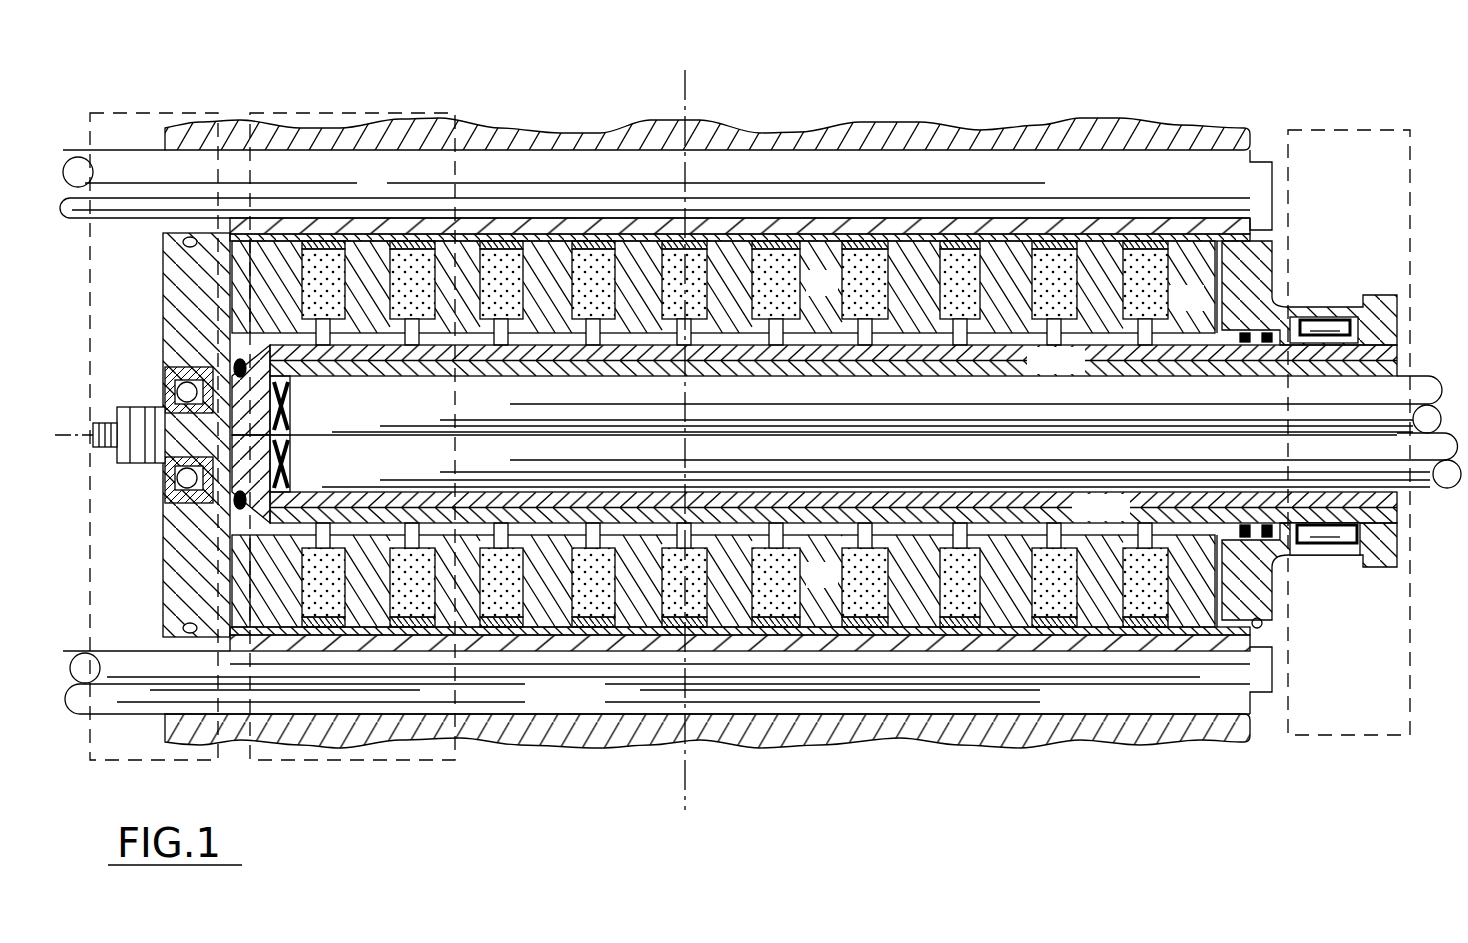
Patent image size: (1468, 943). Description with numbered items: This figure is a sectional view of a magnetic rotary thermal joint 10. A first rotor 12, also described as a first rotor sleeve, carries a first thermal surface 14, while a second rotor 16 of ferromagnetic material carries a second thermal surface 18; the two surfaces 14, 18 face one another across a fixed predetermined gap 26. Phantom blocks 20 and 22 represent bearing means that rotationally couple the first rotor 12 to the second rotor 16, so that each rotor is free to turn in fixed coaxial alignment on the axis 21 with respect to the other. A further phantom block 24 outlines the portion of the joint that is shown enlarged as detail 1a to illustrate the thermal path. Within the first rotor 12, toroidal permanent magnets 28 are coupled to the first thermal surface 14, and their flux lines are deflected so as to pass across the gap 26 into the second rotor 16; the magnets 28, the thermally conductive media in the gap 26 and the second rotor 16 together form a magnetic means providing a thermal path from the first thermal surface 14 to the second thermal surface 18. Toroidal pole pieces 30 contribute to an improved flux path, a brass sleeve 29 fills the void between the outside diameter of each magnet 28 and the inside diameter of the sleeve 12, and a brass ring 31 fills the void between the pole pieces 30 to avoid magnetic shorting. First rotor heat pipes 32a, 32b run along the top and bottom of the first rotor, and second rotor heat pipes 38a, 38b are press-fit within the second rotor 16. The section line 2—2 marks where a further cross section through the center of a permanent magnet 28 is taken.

The magnetic rotary thermal joint 10 is at (1256, 102).
The first rotor 12 is at (1216, 216).
The first thermal surface 14 is at (1283, 434).
The second rotor 16 is at (833, 434).
The second thermal surface 18 is at (1197, 350).
The phantom block 20 is at (129, 103).
The axis 21 is at (70, 433).
The phantom block 22 is at (1349, 432).
The phantom block 24 is at (373, 113).
The gap 26 is at (912, 523).
The first permanent magnet 28 is at (735, 433).
The brass sleeve 29 is at (603, 241).
The toroidal pole piece 30 is at (808, 295).
The brass ring 31 is at (734, 433).
The first rotor heat pipe 32a is at (666, 190).
The first rotor heat pipe 32b is at (667, 666).
The second rotor heat pipe 38a is at (837, 390).
The second rotor heat pipe 38b is at (846, 478).
The motor unit 1a is at (345, 760).
The line 2— 2 is at (720, 765).